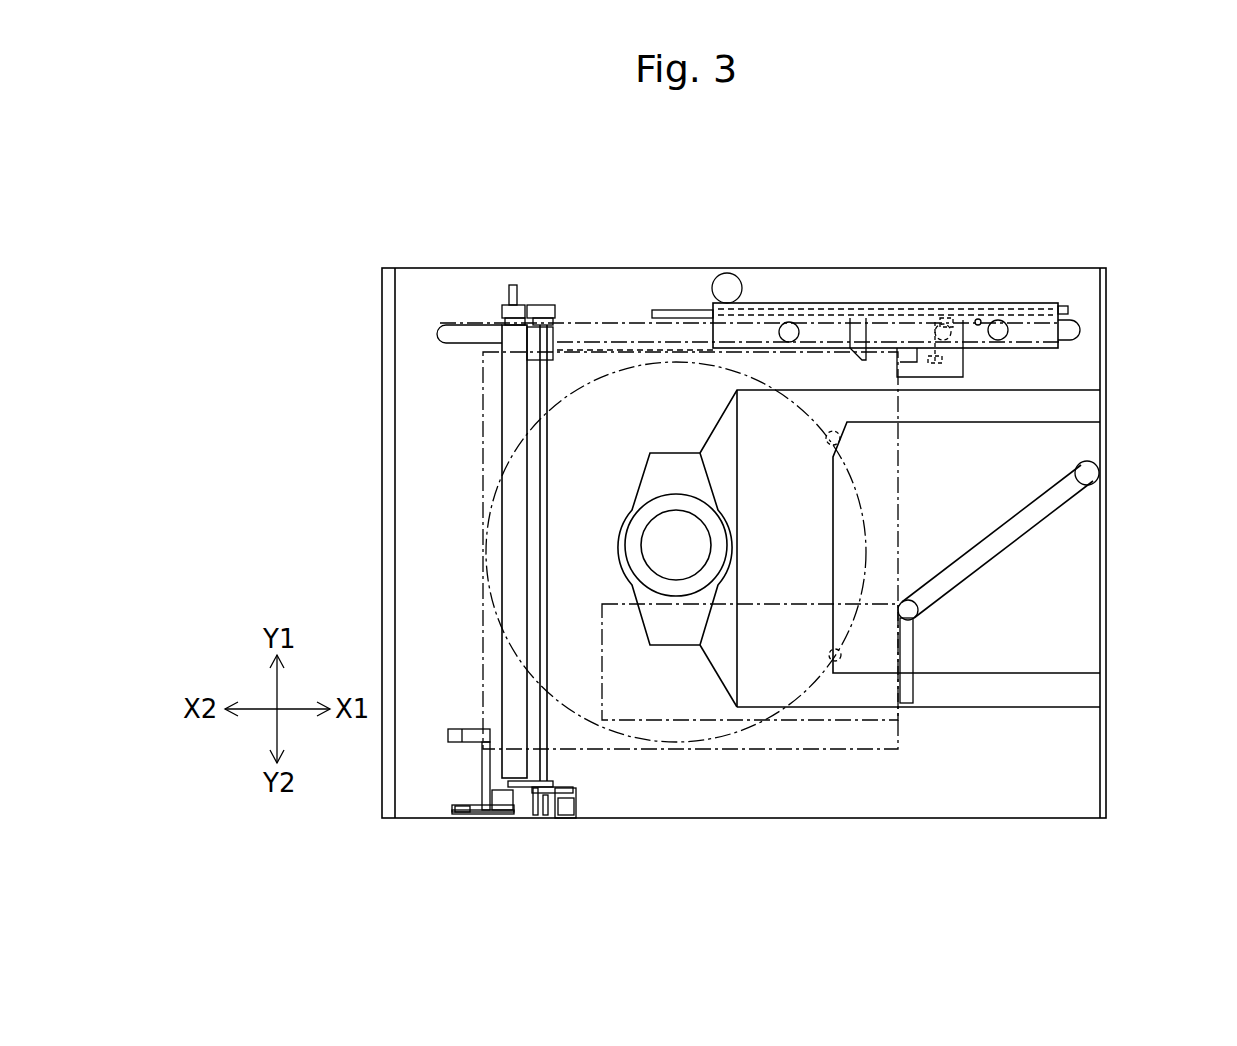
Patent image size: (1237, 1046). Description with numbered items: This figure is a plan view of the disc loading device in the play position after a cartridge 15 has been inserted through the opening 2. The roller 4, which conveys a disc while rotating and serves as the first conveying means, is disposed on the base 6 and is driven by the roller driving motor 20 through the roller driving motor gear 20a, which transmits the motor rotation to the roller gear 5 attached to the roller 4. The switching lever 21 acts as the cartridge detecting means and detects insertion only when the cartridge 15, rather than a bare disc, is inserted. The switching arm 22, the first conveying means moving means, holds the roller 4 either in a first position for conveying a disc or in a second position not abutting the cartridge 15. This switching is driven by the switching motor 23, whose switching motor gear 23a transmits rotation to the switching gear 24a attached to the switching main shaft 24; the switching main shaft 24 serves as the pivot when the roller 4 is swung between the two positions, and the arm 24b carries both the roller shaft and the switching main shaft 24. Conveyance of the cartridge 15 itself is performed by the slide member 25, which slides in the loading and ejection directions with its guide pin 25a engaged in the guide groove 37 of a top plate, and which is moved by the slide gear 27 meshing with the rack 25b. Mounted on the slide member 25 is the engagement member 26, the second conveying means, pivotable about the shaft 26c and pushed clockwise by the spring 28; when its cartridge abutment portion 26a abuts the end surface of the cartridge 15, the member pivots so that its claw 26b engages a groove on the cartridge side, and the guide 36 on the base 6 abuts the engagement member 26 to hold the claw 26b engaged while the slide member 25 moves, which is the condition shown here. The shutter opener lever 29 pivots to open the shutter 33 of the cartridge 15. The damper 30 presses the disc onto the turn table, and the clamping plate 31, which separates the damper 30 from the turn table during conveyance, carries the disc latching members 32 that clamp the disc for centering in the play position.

The opening 2 is at (382, 375).
The roller 4 is at (503, 348).
The roller gear 5 is at (510, 303).
The base 6 is at (1092, 325).
The cartridge 15 is at (483, 495).
The roller driving motor 20 is at (563, 328).
The roller driving motor gear 20a is at (538, 305).
The switching lever 21 is at (465, 742).
The switching arm 22 is at (520, 811).
The switching motor 23 is at (566, 816).
The switching motor gear 23a is at (577, 816).
The switching main shaft 24 is at (575, 793).
The switching gear 24a is at (548, 815).
The arm 24b is at (512, 322).
The slide member 25 is at (1040, 304).
The guide pin 25a is at (792, 322).
The rack 25b is at (790, 309).
The engagement member 26 is at (963, 372).
The cartridge abutment portion 26a is at (912, 340).
The claw 26b is at (863, 327).
The shaft 26c is at (943, 325).
The slide gear 27 is at (730, 285).
The spring 28 is at (953, 320).
The shutter opener lever 29 is at (1050, 480).
The damper 30 is at (667, 593).
The clamping plate 31 is at (778, 662).
The disc latching members 32 is at (840, 665).
The shutter 33 is at (913, 690).
The guide 36 is at (688, 310).
The guide groove 37 is at (623, 322).